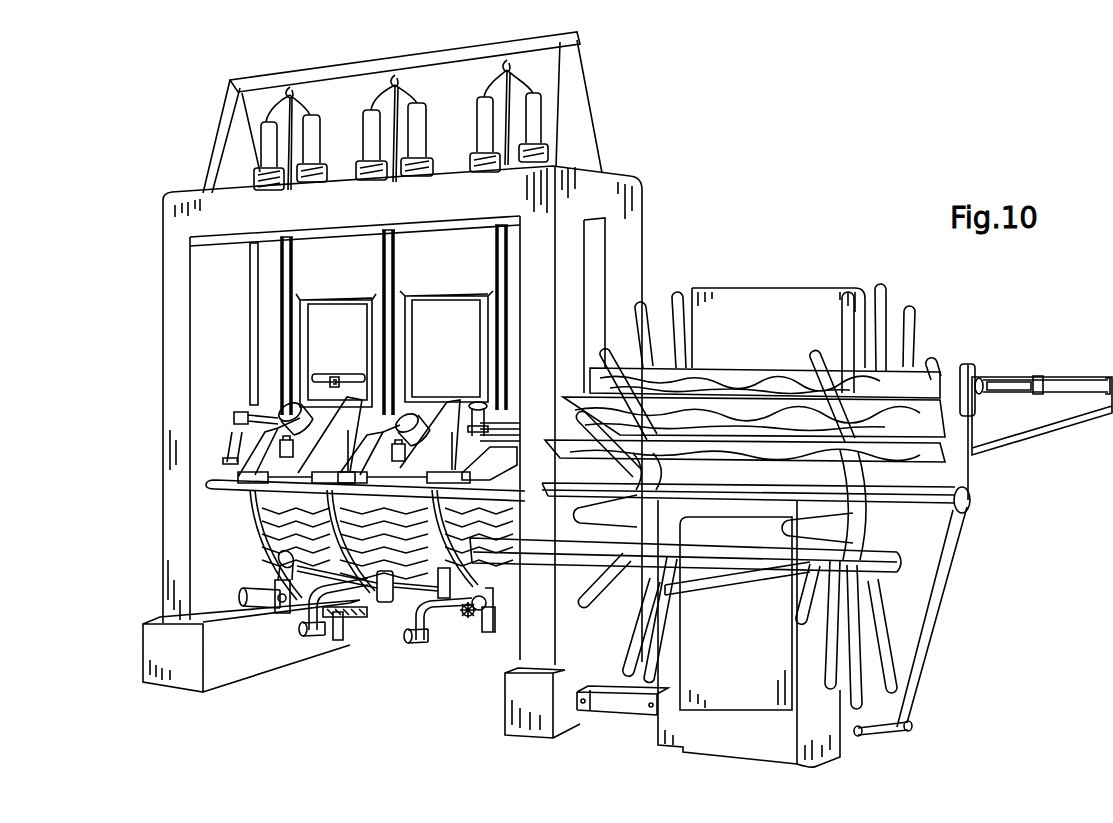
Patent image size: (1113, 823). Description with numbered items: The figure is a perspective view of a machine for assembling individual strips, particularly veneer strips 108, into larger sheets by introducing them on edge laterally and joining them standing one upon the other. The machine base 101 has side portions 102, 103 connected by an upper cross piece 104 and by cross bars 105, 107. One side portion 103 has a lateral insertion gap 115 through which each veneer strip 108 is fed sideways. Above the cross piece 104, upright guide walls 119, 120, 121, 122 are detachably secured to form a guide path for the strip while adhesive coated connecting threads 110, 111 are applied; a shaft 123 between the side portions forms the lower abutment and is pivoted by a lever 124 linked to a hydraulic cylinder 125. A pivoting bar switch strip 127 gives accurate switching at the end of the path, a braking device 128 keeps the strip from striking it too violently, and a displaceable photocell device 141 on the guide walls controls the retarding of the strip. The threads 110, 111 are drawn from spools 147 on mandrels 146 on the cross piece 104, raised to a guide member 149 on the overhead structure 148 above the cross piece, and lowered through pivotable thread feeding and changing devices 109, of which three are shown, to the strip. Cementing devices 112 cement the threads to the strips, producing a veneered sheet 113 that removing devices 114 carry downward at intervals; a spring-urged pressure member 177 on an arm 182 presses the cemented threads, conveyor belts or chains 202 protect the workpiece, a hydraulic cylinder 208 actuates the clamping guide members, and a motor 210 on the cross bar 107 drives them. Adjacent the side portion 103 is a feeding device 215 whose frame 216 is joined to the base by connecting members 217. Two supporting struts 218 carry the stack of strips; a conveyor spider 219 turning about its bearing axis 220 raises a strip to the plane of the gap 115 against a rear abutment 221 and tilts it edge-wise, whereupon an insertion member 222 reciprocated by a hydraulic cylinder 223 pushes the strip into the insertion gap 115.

The machine base 101 is at (165, 417).
The side portion 102 is at (178, 450).
The side portion 103 is at (540, 598).
The upper cross piece 104 is at (215, 212).
The cross bar 105 is at (276, 503).
The cross bar 107 is at (250, 608).
The veneer strip 108 is at (950, 447).
The thread feeding and thread changing device 109 is at (382, 257).
The connecting thread 110 is at (273, 190).
The connecting thread 111 is at (303, 187).
The cementing device 112 is at (248, 482).
The veneered sheet 113 is at (388, 582).
The removing device 114 is at (347, 456).
The lateral insertion gap 115 is at (590, 232).
The guide wall 119 is at (448, 308).
The guide wall 120 is at (433, 296).
The guide wall 121 is at (341, 308).
The guide wall 122 is at (328, 299).
The shaft 123 is at (410, 413).
The lever 124 is at (251, 410).
The hydraulic cylinder 125 is at (229, 450).
The bar switch strip 127 is at (252, 272).
The braking device 128 is at (477, 402).
The photocell device 141 is at (341, 382).
The mandrel 146 is at (370, 128).
The spool 147 is at (362, 162).
The overhead truss 148 is at (259, 82).
The guide member 149 is at (407, 78).
The pressure member 177 is at (250, 590).
The arm 182 is at (283, 612).
The conveyor belt or chain 202 is at (466, 618).
The hydraulic cylinder 208 is at (315, 637).
The motor 210 is at (404, 620).
The feeding device 215 is at (761, 680).
The frame 216 is at (716, 733).
The connecting member 217 is at (627, 705).
The supporting strut 218 is at (718, 578).
The conveyor spider 219 is at (918, 313).
The bearing axis 220 is at (906, 487).
The rear abutment 221 is at (768, 300).
The insertion member 222 is at (970, 379).
The hydraulic cylinder 223 is at (1057, 390).